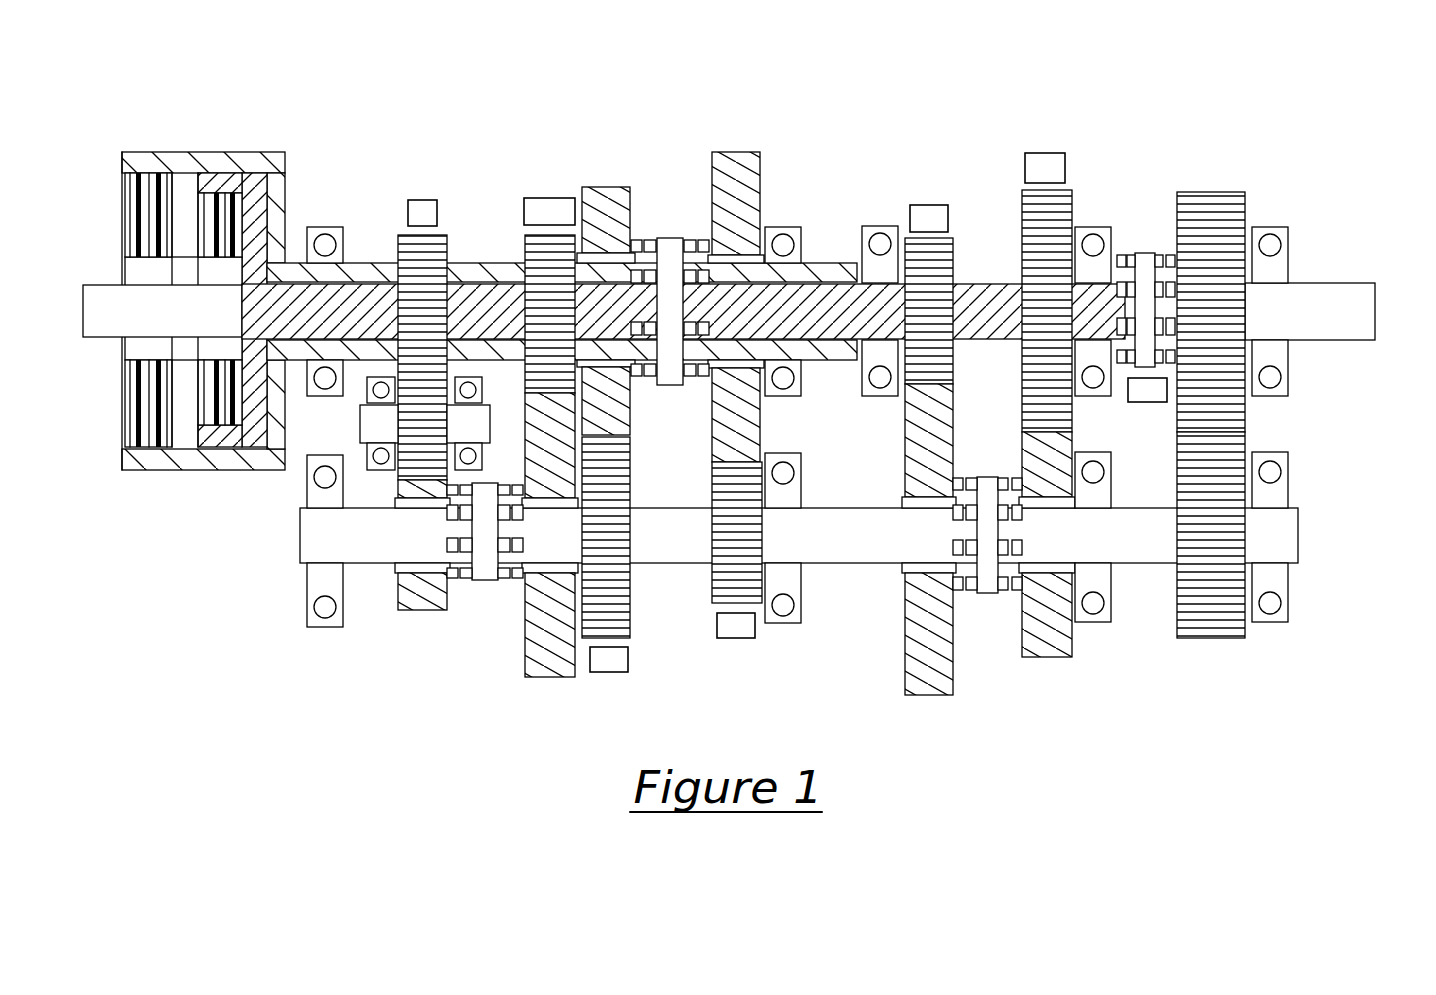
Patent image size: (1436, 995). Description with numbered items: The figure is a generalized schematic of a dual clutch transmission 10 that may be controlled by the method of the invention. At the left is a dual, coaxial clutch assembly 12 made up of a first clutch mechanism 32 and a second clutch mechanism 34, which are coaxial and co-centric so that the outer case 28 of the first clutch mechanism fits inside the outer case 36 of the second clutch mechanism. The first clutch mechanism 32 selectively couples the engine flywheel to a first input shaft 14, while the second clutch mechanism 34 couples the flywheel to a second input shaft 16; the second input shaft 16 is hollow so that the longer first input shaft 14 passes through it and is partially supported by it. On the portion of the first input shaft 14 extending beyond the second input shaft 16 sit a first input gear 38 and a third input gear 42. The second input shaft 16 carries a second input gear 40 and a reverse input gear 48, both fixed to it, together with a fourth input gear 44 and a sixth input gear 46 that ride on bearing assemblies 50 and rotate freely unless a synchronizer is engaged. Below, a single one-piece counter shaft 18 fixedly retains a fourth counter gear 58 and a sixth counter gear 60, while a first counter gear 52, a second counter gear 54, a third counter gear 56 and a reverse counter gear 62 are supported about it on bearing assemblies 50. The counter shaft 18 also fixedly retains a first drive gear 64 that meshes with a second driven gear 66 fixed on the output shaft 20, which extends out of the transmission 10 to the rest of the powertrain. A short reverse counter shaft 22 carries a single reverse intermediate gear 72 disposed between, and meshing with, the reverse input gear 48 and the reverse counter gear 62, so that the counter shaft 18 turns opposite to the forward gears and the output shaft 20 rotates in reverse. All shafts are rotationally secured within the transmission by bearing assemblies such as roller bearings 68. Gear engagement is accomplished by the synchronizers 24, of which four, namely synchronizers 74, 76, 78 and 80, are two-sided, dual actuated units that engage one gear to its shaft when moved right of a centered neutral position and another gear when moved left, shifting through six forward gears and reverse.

The dual clutch transmission 10 is at (823, 379).
The dual coaxial clutch assembly 12 is at (224, 271).
The first input shaft 14 is at (985, 290).
The second input shaft 16 is at (343, 273).
The counter shaft 18 is at (305, 545).
The output shaft 20 is at (1372, 292).
The reverse counter shaft 22 is at (310, 427).
The synchronizers 24 is at (690, 200).
The outer case of the first clutch mechanism 28 is at (258, 215).
The first clutch mechanism 32 is at (230, 208).
The second clutch mechanism 34 is at (152, 183).
The outer case of the second clutch mechanism 36 is at (288, 178).
The first input gear 38 is at (955, 257).
The second input gear 40 is at (523, 247).
The third input gear 42 is at (1068, 197).
The fourth input gear 44 is at (614, 190).
The sixth input gear 46 is at (750, 158).
The reverse input gear 48 is at (448, 248).
The bearing assemblies 50 is at (635, 367).
The first counter gear 52 is at (905, 630).
The second counter gear 54 is at (568, 667).
The third counter gear 56 is at (1037, 652).
The fourth counter gear 58 is at (620, 617).
The sixth counter gear 60 is at (708, 585).
The reverse counter gear 62 is at (397, 603).
The first drive gear 64 is at (1180, 612).
The second driven gear 66 is at (1223, 205).
The bearing assembly 68 is at (805, 238).
The reverse intermediate gear 72 is at (362, 425).
The synchronizer 74 is at (667, 238).
The synchronizer 76 is at (1143, 267).
The synchronizer 78 is at (990, 580).
The synchronizer 80 is at (485, 573).